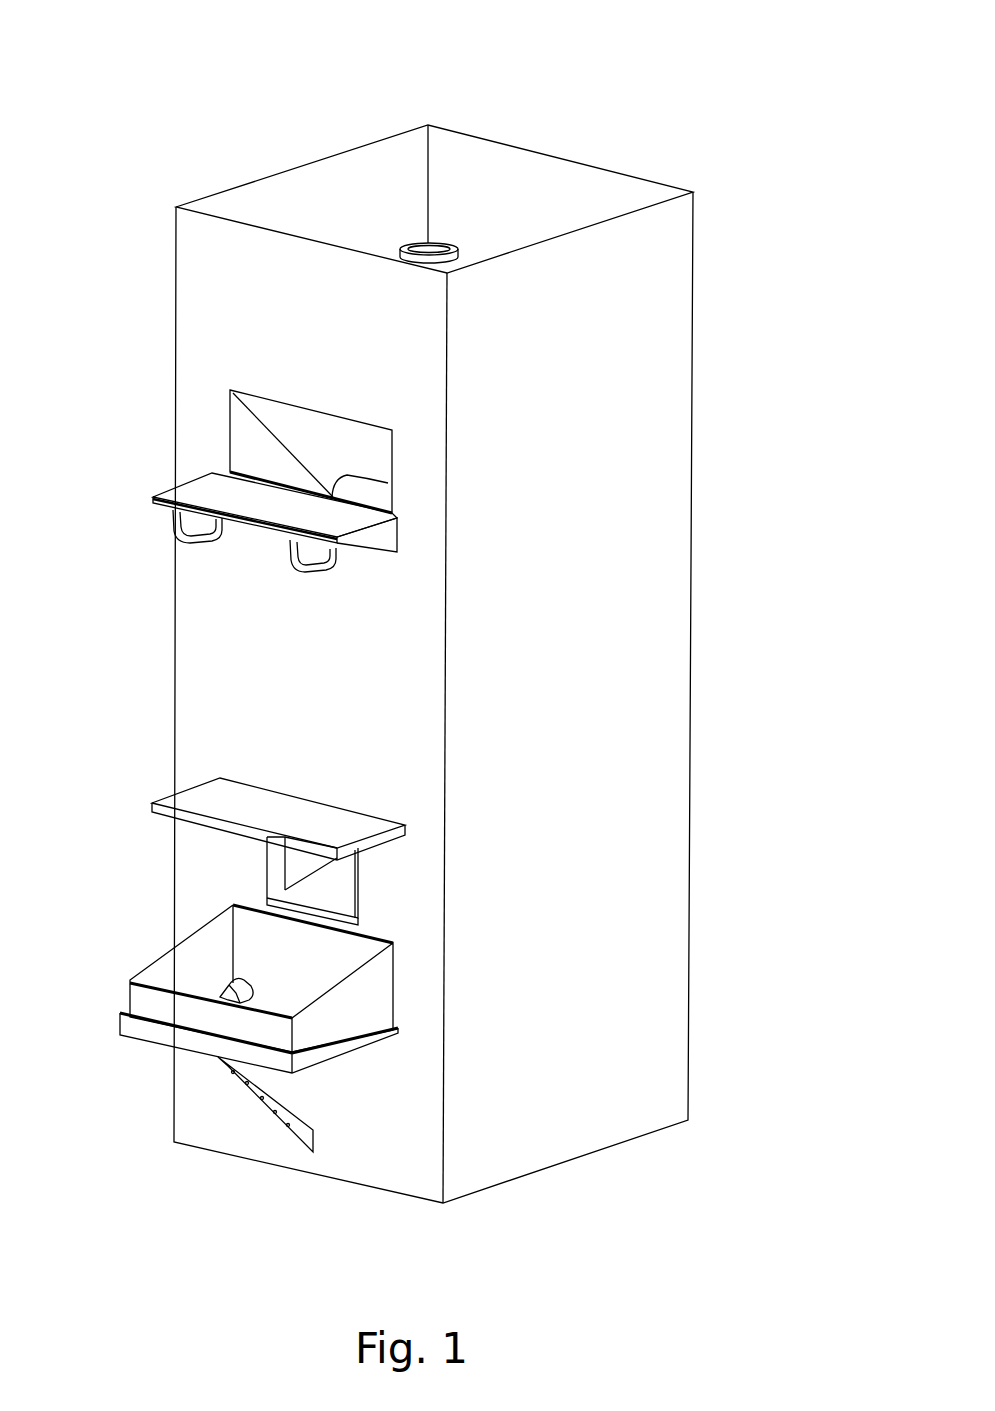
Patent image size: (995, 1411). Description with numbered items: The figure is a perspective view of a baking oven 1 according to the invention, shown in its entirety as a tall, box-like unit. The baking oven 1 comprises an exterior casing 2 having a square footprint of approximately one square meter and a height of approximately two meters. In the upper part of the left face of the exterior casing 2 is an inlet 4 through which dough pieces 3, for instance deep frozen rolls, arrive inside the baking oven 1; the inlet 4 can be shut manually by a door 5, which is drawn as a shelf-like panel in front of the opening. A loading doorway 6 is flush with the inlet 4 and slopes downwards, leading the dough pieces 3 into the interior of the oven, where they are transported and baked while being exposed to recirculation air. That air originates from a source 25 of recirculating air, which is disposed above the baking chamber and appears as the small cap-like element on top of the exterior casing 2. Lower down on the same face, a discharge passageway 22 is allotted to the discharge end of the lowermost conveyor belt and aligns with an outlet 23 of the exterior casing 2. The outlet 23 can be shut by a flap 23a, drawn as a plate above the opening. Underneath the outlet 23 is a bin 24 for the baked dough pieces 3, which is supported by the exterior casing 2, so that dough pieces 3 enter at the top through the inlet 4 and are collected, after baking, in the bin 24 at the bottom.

The baking oven 1 is at (543, 138).
The exterior casing 2 is at (667, 317).
The dough pieces 3 is at (217, 987).
The inlet 4 is at (295, 408).
The door 5 is at (253, 502).
The loading doorway 6 is at (340, 450).
The discharge passageway 22 is at (302, 860).
The outlet 23 is at (275, 872).
The flap 23a is at (299, 826).
The bin 24 is at (212, 945).
The source of recirculating air 25 is at (441, 247).